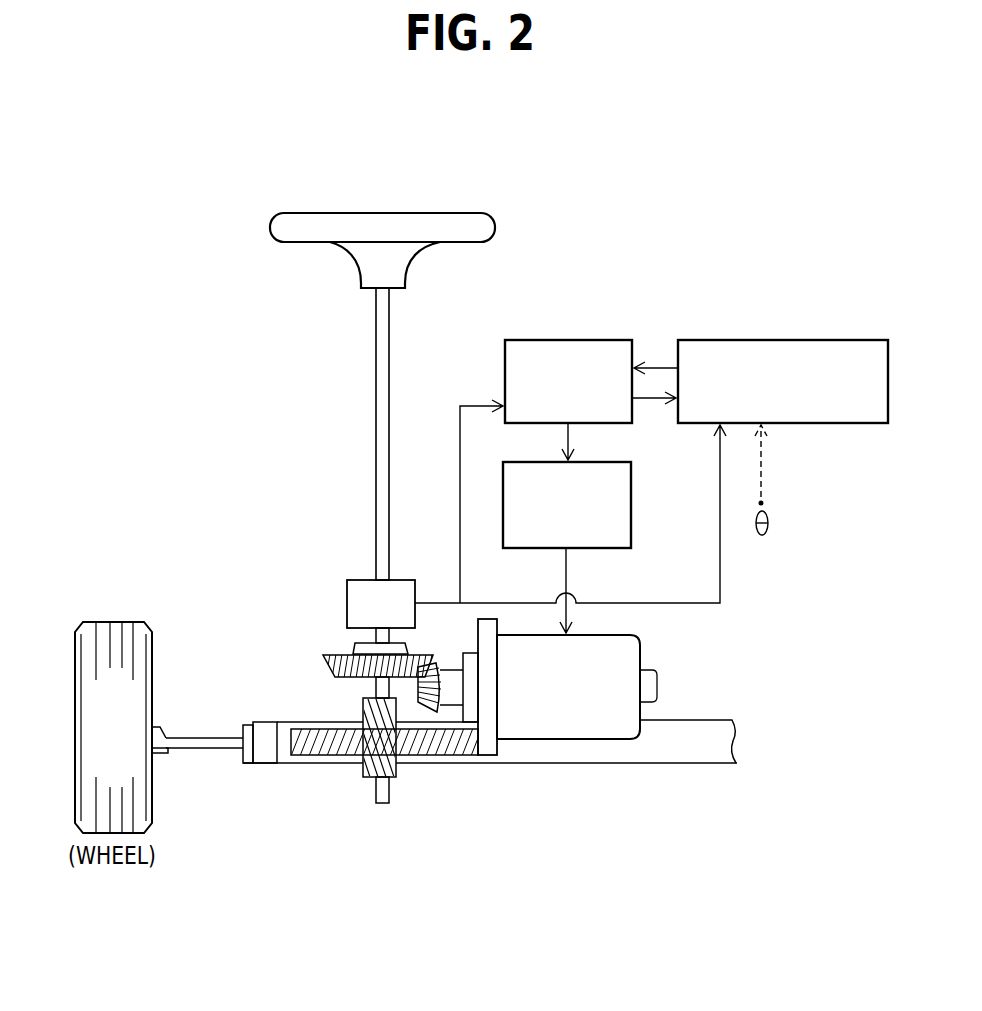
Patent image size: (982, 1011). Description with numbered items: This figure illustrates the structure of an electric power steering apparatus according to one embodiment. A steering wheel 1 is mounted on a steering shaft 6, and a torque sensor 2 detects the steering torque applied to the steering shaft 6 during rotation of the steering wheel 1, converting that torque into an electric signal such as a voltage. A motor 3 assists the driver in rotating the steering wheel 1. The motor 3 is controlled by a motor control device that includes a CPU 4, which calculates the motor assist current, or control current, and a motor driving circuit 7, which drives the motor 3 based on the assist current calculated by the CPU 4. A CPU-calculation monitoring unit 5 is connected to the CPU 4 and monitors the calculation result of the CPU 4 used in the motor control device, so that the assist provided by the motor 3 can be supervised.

The steering wheel 1 is at (390, 222).
The torque sensor 2 is at (347, 603).
The motor 3 is at (583, 724).
The CPU 4 is at (578, 337).
The CPU-calculation monitoring unit 5 is at (763, 337).
The steering shaft 6 is at (376, 452).
The motor driving circuit 7 is at (632, 505).